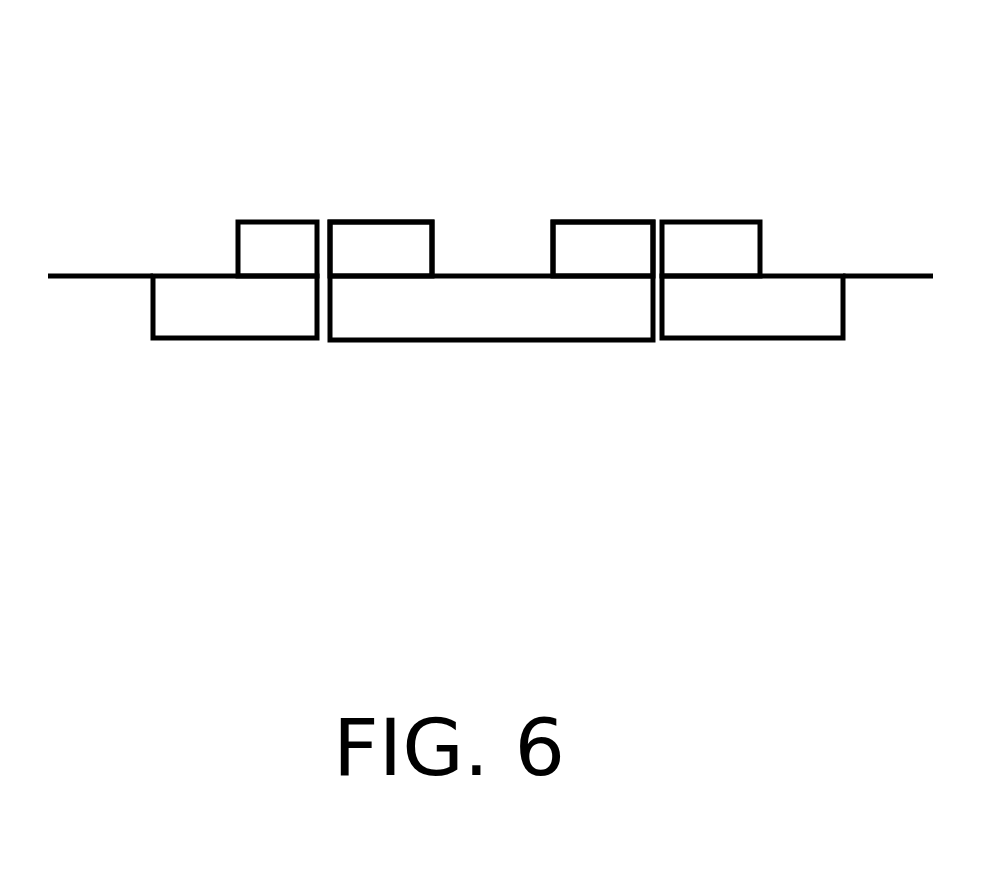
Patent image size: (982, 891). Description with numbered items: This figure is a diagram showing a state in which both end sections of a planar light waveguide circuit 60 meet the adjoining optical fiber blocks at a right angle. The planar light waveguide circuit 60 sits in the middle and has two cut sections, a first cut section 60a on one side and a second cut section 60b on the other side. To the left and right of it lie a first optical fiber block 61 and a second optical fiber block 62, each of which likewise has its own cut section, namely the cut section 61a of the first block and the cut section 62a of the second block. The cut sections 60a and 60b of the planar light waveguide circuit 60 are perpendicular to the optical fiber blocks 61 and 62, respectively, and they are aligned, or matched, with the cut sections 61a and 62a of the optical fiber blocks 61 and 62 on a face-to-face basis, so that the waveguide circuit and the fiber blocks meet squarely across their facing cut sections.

The planar light waveguide circuit 60 is at (486, 224).
The cut section of the planar light waveguide circuit 60a is at (332, 250).
The cut section of the planar light waveguide circuit 60b is at (651, 250).
The optical fiber block 61 is at (286, 244).
The cut section of the optical fiber block 61a is at (318, 300).
The optical fiber block 62 is at (730, 243).
The cut section of the optical fiber block 62a is at (667, 297).